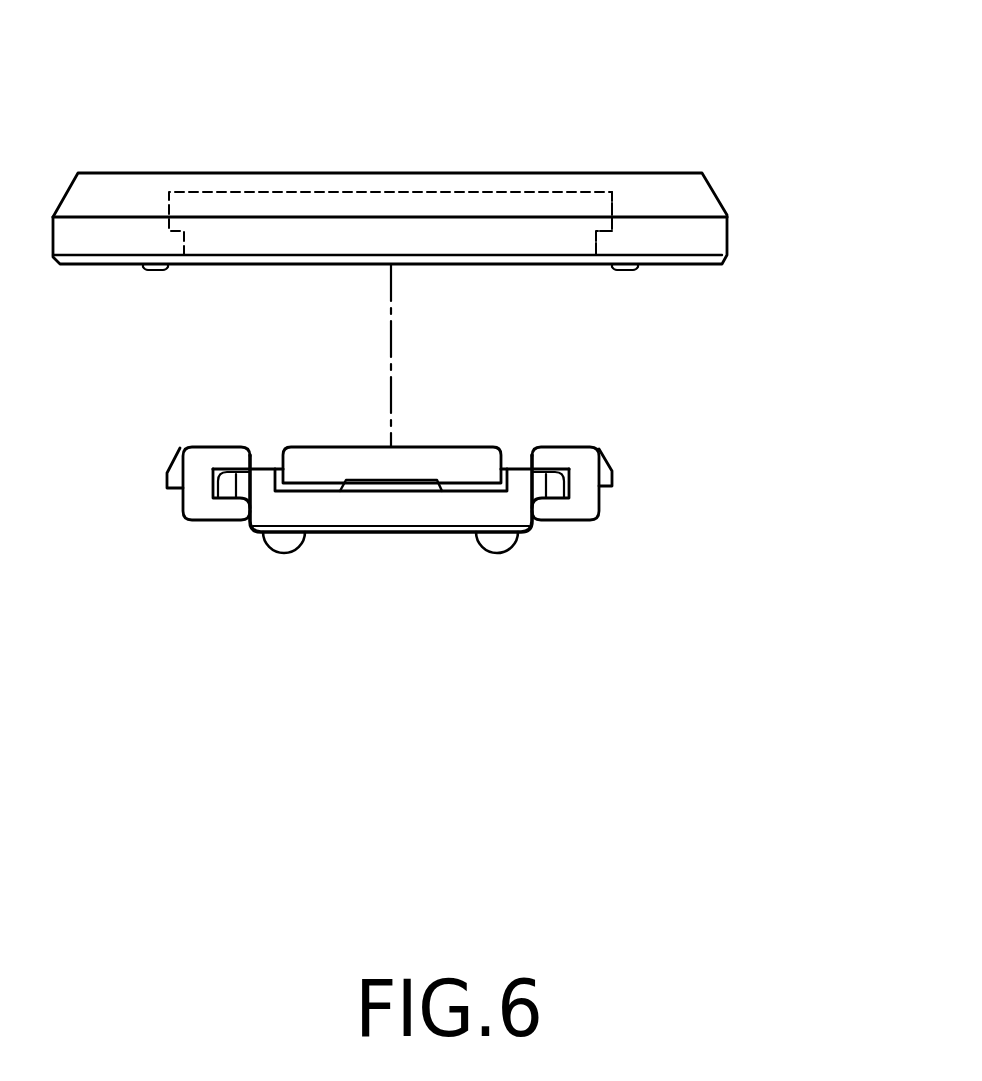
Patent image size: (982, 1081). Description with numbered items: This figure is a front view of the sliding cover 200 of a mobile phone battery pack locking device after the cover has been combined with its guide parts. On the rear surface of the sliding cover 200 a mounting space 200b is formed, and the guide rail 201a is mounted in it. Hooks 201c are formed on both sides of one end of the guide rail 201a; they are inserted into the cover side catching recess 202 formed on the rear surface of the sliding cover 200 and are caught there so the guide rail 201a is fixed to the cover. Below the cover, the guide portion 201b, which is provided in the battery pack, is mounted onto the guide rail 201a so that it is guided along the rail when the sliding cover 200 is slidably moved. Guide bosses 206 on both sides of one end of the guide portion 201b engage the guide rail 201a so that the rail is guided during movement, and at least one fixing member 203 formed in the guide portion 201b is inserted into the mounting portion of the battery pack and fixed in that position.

The sliding cover 200 is at (549, 160).
The mounting space 200b is at (310, 208).
The cover side catching recess 202 is at (603, 207).
The guide rail 201a is at (524, 441).
The guide portion 201b is at (536, 530).
The hooks 201c is at (612, 474).
The guide bosses 206 is at (553, 488).
The fixing member 203 is at (287, 543).